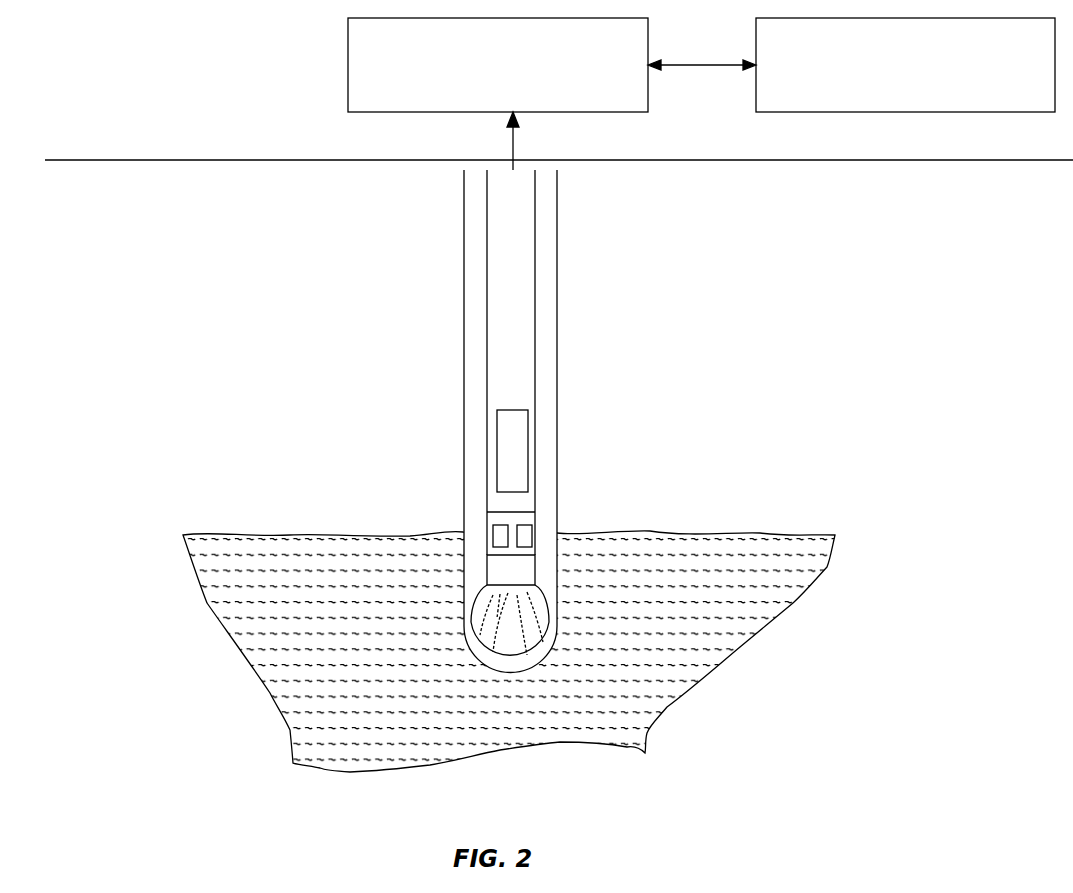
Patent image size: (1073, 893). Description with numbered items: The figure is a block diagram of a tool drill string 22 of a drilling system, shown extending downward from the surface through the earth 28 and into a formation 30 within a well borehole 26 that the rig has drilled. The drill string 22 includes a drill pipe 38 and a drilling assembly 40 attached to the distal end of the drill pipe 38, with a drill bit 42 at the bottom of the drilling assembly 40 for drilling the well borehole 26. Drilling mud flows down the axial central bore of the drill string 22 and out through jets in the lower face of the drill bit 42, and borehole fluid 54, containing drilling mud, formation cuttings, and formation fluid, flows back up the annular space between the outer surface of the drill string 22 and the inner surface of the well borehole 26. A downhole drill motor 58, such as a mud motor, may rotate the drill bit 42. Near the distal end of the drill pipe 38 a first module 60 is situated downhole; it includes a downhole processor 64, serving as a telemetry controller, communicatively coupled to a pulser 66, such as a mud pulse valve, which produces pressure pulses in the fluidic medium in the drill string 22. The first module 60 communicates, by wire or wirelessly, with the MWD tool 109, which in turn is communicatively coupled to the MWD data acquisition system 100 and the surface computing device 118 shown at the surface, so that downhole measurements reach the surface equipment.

The MWD data acquisition system 100 is at (564, 94).
The surface computing device 118 is at (968, 94).
The earth 28 is at (207, 375).
The formation 30 is at (383, 683).
The drill string 22 is at (553, 283).
The well borehole 26 is at (558, 378).
The drill pipe 38 is at (522, 193).
The borehole fluid 54 is at (477, 438).
The MWD tool 109 is at (507, 428).
The first module 60 is at (525, 512).
The downhole processor 64 is at (497, 538).
The pulser 66 is at (517, 527).
The drilling assembly 40 is at (552, 531).
The downhole drill motor 58 is at (507, 573).
The drill bit 42 is at (527, 642).